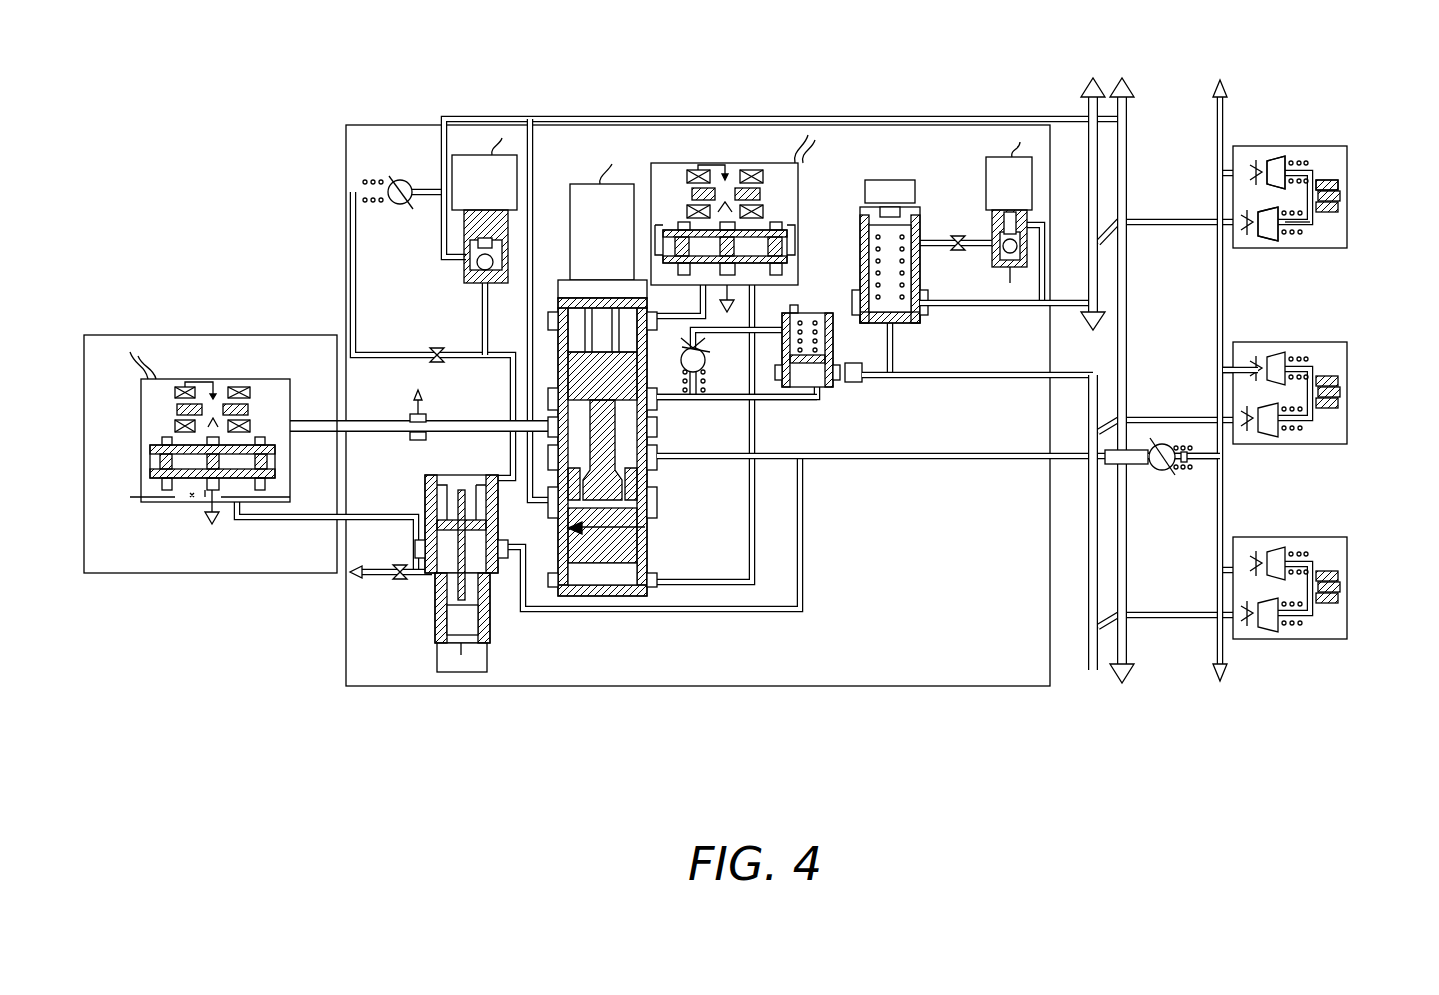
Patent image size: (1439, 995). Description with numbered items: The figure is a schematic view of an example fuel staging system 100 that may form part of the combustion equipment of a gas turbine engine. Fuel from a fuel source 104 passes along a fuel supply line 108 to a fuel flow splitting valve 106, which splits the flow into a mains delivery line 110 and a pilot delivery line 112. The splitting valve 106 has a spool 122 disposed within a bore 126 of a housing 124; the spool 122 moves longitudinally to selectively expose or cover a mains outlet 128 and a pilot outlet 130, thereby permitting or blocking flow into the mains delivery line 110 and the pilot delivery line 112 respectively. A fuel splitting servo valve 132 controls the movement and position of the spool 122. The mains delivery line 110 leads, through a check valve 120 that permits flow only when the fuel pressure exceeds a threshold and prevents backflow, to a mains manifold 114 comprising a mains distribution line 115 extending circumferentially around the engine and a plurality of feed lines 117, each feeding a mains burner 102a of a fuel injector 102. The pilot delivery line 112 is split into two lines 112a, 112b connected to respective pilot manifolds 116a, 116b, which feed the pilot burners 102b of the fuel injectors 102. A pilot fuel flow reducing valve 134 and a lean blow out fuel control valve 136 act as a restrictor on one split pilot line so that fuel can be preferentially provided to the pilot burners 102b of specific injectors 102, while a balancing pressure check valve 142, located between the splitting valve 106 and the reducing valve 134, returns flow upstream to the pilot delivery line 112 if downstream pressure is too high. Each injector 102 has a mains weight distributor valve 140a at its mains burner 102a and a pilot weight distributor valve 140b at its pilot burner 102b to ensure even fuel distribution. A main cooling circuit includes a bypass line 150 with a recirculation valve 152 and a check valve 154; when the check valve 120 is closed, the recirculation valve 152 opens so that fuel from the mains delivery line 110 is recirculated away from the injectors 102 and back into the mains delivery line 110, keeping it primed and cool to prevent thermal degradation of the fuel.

The fuel staging system 100 is at (308, 70).
The fuel injector 102 is at (1347, 165).
The mains burner 102a is at (1338, 164).
The pilot burner 102b is at (1300, 228).
The fuel source 104 is at (131, 326).
The fuel flow splitting valve 106 is at (602, 583).
The fuel supply line 108 is at (357, 422).
The mains delivery line 110 is at (893, 462).
The pilot delivery line 112 is at (722, 400).
The split pilot line 112a is at (925, 380).
The split pilot line 112b is at (990, 307).
The mains manifold 114 is at (1218, 270).
The mains distribution line 115 is at (1223, 497).
The pilot manifold 116a is at (1090, 522).
The pilot manifold 116b is at (1092, 84).
The feed line 117 is at (1275, 345).
The check valve 120 is at (1162, 475).
The spool 122 is at (560, 372).
The housing 124 is at (650, 565).
The bore 126 is at (655, 524).
The mains outlet 128 is at (655, 470).
The pilot outlet 130 is at (652, 397).
The fuel splitting servo valve 132 is at (672, 163).
The pilot fuel flow reducing valve 134 is at (875, 180).
The lean blow out fuel control valve 136 is at (1000, 157).
The mains weight distributor valve 140a is at (1275, 160).
The pilot weight distributor valve 140b is at (1267, 240).
The balancing pressure check valve 142 is at (812, 313).
The bypass line 150 is at (1124, 105).
The recirculation valve 152 is at (462, 160).
The check valve 154 is at (368, 184).